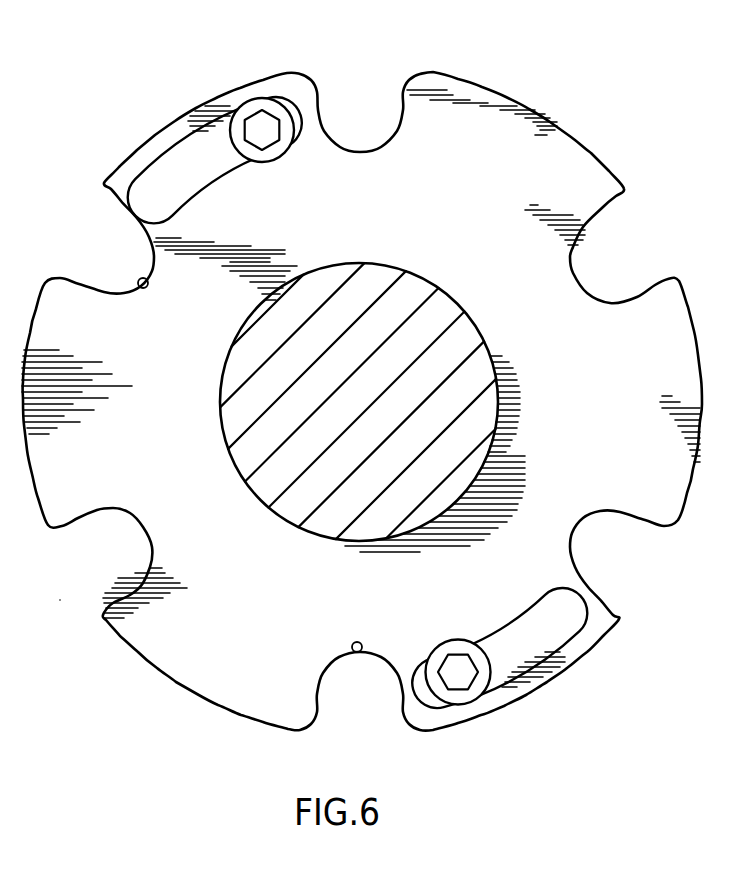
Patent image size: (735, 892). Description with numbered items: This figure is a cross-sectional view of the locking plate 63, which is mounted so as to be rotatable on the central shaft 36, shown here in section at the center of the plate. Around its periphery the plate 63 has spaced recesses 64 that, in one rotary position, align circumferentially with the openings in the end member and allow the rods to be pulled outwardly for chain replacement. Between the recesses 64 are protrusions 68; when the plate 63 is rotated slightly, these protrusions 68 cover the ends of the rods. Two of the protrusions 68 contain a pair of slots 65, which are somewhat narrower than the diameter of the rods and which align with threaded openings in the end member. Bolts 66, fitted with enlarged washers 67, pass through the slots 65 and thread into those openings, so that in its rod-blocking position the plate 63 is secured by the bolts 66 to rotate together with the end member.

The central shaft 36 is at (495, 417).
The locking plate 63 is at (566, 108).
The spaced recesses 64 is at (139, 282).
The slots 65 is at (170, 154).
The bolts 66 is at (260, 128).
The enlarged washers 67 is at (250, 108).
The protrusions 68 is at (683, 357).